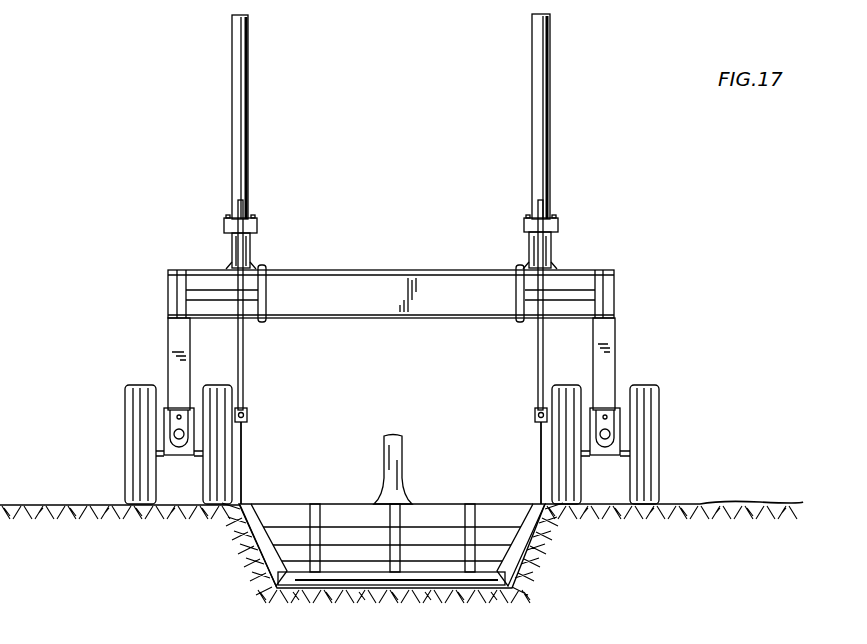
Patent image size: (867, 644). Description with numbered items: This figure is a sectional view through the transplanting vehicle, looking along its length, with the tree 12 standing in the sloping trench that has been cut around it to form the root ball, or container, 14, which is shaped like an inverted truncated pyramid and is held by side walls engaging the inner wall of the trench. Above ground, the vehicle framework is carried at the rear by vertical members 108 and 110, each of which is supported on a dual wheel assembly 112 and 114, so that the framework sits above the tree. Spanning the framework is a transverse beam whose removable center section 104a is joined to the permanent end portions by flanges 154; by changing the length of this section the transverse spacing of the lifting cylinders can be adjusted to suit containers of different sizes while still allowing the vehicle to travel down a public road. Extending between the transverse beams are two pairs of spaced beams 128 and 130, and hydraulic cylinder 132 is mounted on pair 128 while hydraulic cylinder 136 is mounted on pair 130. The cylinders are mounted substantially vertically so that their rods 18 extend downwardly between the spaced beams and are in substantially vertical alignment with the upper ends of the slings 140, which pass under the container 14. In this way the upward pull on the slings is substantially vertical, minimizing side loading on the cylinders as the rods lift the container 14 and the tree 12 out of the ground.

The tree 12 is at (404, 448).
The root ball / container 14 is at (452, 496).
The lifting rod 18 is at (241, 185).
The removable center section 104a is at (388, 308).
The vertical member 108 is at (181, 352).
The vertical member 110 is at (606, 346).
The dual wheel assembly 112 is at (125, 453).
The dual wheel assembly 114 is at (667, 458).
The pair of spaced beams 128 is at (222, 245).
The pair of spaced beams 130 is at (560, 249).
The hydraulic cylinder 132 is at (234, 83).
The hydraulic cylinder 136 is at (547, 84).
The sling 140 is at (243, 463).
The flange 154 is at (263, 268).